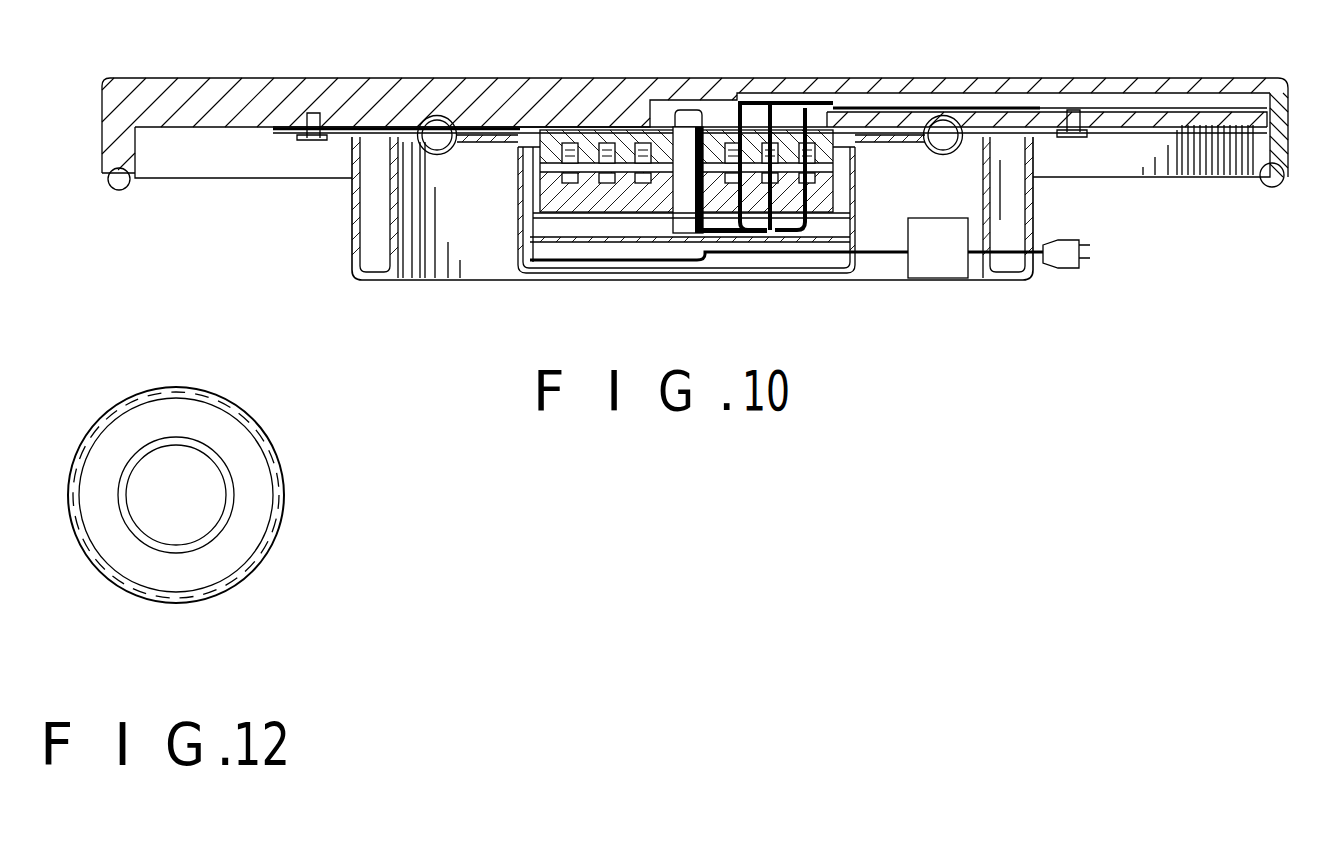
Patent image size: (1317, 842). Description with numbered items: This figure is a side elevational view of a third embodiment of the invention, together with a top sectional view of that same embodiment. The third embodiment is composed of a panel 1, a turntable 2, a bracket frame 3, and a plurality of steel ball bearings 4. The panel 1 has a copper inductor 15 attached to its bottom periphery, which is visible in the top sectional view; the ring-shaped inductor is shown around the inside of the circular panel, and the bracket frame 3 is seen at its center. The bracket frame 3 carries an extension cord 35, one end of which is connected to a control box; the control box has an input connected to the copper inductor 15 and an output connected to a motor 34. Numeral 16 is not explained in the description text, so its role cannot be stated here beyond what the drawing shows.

In FIG. 10, the panel 1 is at (1223, 80).
In FIG. 12, the panel 1 is at (183, 388).
In FIG. 10, the turntable 2 is at (340, 132).
In FIG. 10, the bracket frame 3 is at (387, 277).
In FIG. 12, the bracket frame 3 is at (182, 545).
In FIG. 10, the steel ball bearings 4 is at (943, 127).
In FIG. 10, the copper inductor 15 is at (1268, 187).
In FIG. 12, the ring 16 is at (284, 510).
In FIG. 10, the motor 34 is at (933, 267).
In FIG. 10, the extension cord 35 is at (1072, 257).